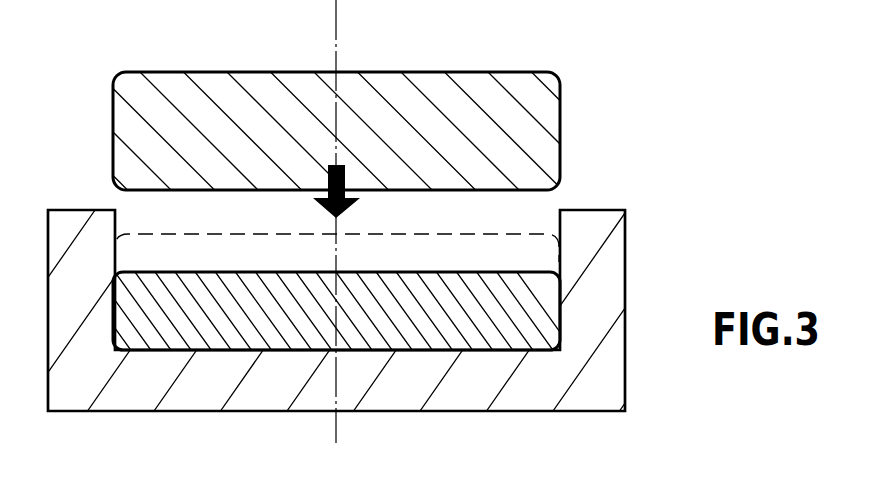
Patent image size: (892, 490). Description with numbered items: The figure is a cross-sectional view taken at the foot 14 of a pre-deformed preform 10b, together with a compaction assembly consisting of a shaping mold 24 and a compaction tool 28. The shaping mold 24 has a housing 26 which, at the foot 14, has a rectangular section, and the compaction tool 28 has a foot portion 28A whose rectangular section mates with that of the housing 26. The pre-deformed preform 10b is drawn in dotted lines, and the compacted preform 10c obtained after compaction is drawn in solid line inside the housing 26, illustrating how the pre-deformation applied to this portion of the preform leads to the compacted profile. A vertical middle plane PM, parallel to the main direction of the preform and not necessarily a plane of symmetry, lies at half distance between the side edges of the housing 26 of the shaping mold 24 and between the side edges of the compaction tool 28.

The middle plane PM is at (338, 46).
The compaction tool 28 is at (517, 63).
The foot portion 28A is at (505, 99).
The housing 26 is at (490, 220).
The shaping mold 24 is at (595, 238).
The pre-deformed preform 10b is at (320, 233).
The foot 14 is at (397, 300).
The compacted preform 10c is at (217, 270).